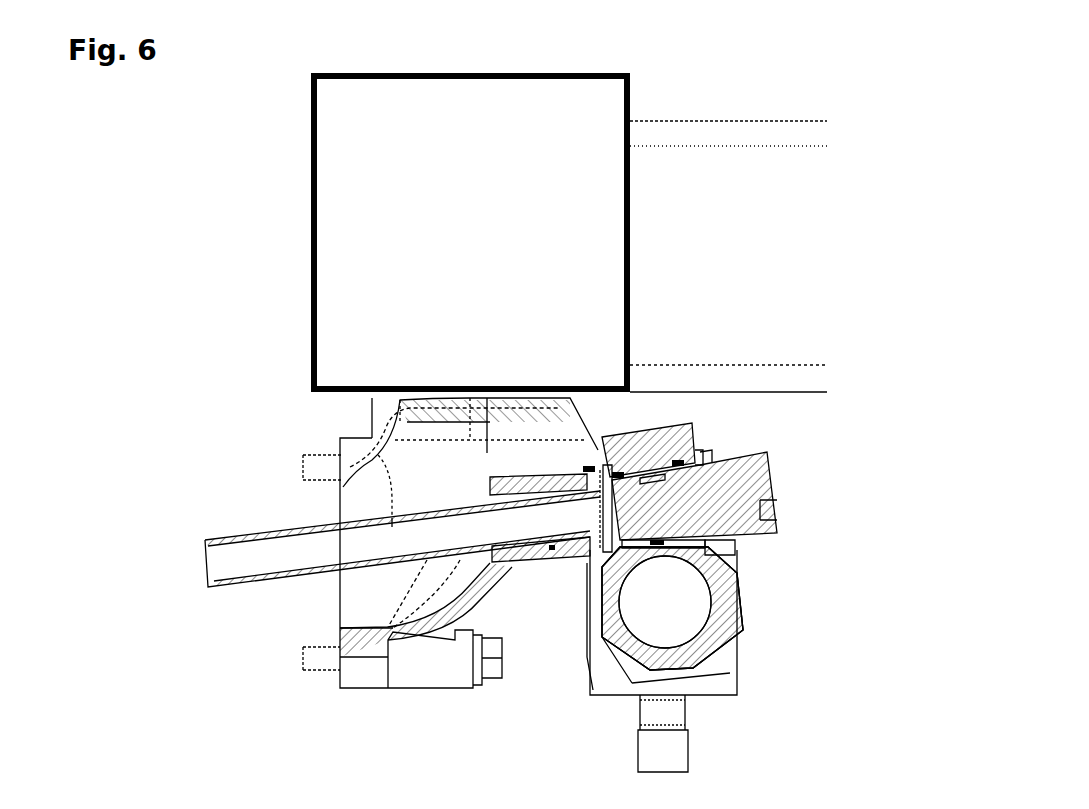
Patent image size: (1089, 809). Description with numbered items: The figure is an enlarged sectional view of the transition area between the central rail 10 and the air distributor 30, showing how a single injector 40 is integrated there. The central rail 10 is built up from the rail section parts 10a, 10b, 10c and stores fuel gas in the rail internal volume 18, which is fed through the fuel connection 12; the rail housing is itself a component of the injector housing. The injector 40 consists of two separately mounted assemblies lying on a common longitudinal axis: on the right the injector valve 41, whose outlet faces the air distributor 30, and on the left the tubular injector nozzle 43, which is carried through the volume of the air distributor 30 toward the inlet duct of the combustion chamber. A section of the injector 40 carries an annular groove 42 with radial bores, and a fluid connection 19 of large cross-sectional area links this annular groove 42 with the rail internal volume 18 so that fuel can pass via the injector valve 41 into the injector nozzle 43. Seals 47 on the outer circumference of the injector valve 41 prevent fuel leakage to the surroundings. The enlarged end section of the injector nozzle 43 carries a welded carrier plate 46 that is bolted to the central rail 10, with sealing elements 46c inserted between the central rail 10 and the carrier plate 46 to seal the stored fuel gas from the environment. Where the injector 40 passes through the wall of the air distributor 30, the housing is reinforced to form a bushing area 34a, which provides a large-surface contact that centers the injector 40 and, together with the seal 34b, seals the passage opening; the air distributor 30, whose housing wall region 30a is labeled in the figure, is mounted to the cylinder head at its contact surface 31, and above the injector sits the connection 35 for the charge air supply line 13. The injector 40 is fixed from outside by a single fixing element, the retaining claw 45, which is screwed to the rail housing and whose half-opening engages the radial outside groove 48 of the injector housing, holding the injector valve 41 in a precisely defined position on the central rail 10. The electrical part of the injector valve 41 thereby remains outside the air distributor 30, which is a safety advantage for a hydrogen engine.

The central rail 10 is at (592, 450).
The rail section part 10a is at (617, 633).
The rail section part 10b is at (672, 608).
The rail section part 10c is at (710, 672).
The fuel connection 12 is at (665, 755).
The charge air supply line 13 is at (682, 200).
The rail internal volume 18 is at (665, 602).
The fluid connection 19 is at (658, 543).
The air distributor 30 is at (243, 198).
The drive housing 30a is at (395, 497).
The contact surface of air distributor 31 is at (335, 686).
The bushing area 34a is at (600, 545).
The seal 34b is at (550, 552).
The connection for charge air supply 35 is at (636, 160).
The injector 40 is at (800, 493).
The injector valve 41 is at (713, 490).
The annular groove 42 is at (652, 477).
The injector nozzle 43 is at (408, 550).
The retaining claw 45 is at (727, 547).
The carrier plate 46 is at (583, 463).
The sealing elements 46c is at (525, 483).
The seals 47 is at (620, 477).
The outside groove 48 is at (703, 455).